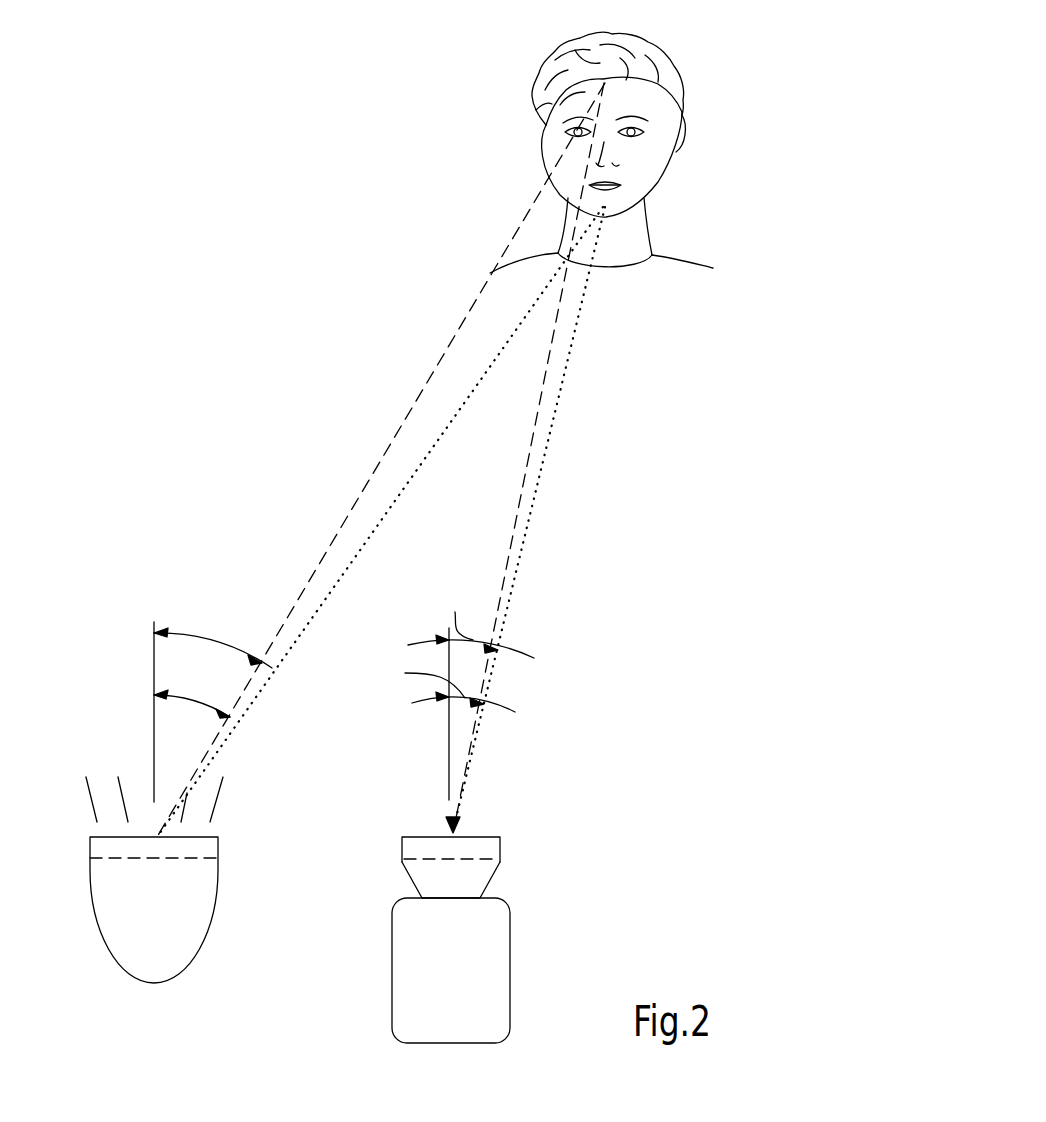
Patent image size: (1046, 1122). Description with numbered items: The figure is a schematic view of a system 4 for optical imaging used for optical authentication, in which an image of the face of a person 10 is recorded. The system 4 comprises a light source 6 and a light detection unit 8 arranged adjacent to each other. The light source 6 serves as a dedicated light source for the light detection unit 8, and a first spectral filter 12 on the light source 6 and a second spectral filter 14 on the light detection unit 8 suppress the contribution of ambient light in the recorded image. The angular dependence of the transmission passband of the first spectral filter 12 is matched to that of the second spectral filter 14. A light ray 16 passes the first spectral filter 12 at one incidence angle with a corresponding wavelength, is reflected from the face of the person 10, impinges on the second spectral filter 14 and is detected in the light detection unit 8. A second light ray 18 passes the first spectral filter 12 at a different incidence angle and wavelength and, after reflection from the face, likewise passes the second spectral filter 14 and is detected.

The system 4 is at (617, 793).
The light source 6 is at (162, 919).
The light detection unit 8 is at (455, 983).
The person 10 is at (713, 68).
The first spectral filter 12 is at (102, 848).
The second spectral filter 14 is at (485, 848).
The light ray 16 is at (410, 408).
The light ray 18 is at (550, 426).